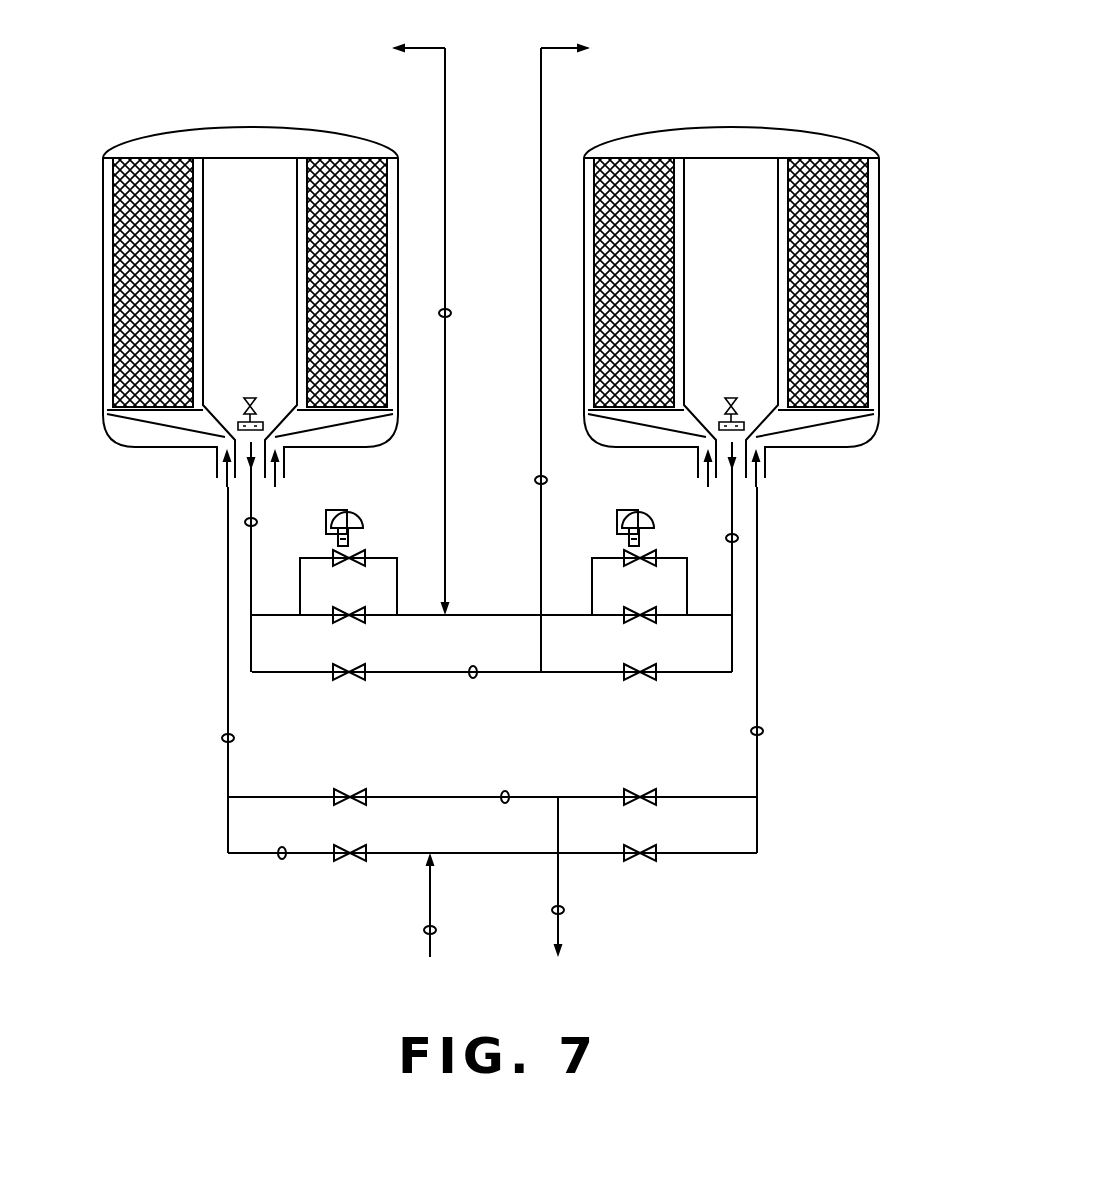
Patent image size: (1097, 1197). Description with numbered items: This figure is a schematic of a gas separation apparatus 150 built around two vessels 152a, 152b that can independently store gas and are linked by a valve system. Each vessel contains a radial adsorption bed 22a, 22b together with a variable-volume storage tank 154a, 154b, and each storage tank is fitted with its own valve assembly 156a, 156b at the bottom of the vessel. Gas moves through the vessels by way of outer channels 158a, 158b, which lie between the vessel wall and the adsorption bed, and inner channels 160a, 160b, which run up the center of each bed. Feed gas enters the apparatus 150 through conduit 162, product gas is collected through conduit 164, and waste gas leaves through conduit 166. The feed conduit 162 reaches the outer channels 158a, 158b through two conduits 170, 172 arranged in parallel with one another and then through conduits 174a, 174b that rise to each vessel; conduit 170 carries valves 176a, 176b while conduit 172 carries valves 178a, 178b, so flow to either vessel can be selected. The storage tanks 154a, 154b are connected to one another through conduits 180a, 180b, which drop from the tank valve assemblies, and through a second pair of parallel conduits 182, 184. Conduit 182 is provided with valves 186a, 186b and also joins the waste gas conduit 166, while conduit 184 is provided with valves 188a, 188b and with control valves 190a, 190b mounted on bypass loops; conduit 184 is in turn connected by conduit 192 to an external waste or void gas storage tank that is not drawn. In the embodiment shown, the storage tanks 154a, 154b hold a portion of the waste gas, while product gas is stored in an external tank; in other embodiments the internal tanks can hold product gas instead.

The apparatus 150 is at (864, 90).
The vessel 152a is at (218, 307).
The vessel 152b is at (764, 307).
The storage tank 154a is at (232, 238).
The storage tank 154b is at (750, 242).
The radial adsorption bed 22a is at (113, 303).
The radial adsorption bed 22b is at (868, 303).
The outer channel 158a is at (108, 372).
The outer channel 158b is at (872, 372).
The inner channel 160a is at (204, 306).
The inner channel 160b is at (686, 308).
The valve assembly 156a is at (268, 407).
The valve assembly 156b is at (749, 407).
The conduit 162 is at (436, 928).
The conduit 164 is at (565, 910).
The conduit 166 is at (546, 477).
The conduit 170 is at (282, 860).
The conduit 172 is at (506, 790).
The conduit 174a is at (222, 739).
The conduit 174b is at (763, 731).
The valve 176a is at (353, 860).
The valve 176b is at (653, 860).
The valve 178a is at (350, 790).
The valve 178b is at (647, 793).
The conduit 180a is at (244, 522).
The conduit 180b is at (738, 538).
The conduit 182 is at (476, 680).
The conduit 184 is at (483, 613).
The valve 186a is at (353, 679).
The valve 186b is at (645, 680).
The valve 188a is at (352, 622).
The valve 188b is at (645, 622).
The control valve 190a is at (350, 556).
The control valve 190b is at (645, 556).
The conduit 192 is at (449, 307).